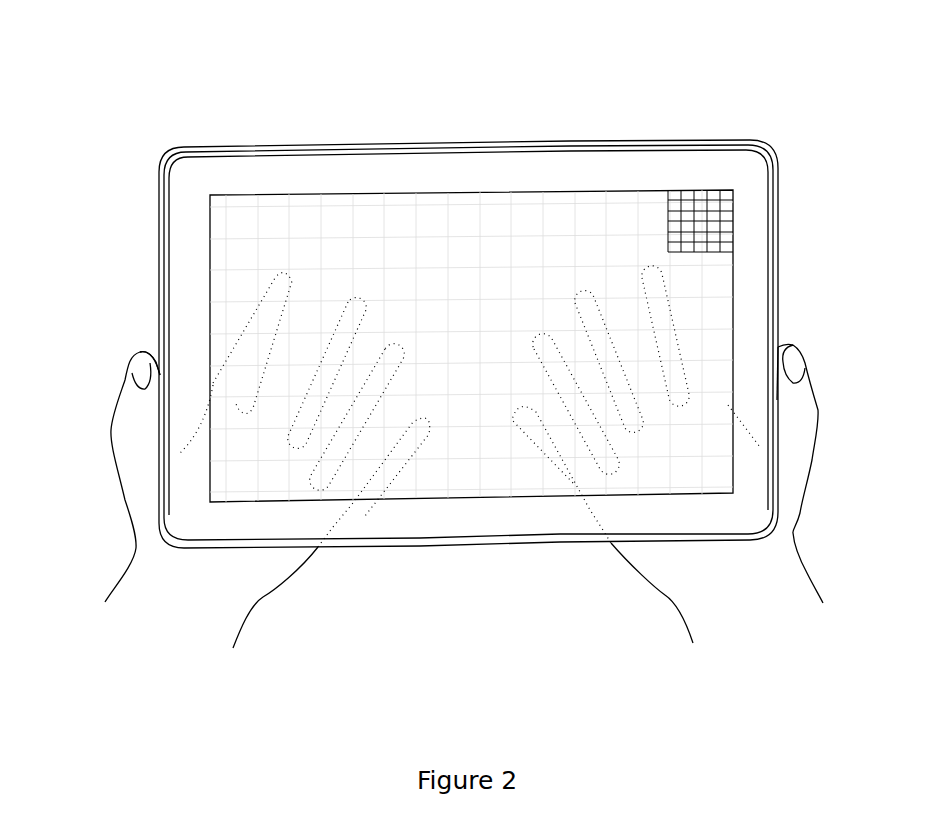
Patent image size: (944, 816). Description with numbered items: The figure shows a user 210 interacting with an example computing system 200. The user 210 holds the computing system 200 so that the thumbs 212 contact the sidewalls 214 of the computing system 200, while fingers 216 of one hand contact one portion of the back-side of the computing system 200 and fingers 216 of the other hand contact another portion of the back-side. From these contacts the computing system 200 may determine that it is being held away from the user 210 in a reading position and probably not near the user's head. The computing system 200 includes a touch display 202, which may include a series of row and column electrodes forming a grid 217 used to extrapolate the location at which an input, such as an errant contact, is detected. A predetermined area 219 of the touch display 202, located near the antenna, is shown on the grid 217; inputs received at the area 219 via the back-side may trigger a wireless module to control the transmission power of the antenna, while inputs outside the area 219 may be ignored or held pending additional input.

The computing system 200 is at (283, 104).
The touch display 202 is at (489, 212).
The user 210 is at (86, 528).
The thumbs 212 is at (803, 427).
The sidewalls 214 is at (160, 207).
The fingers 216 is at (667, 307).
The grid 217 is at (605, 223).
The predetermined area 219 is at (716, 230).